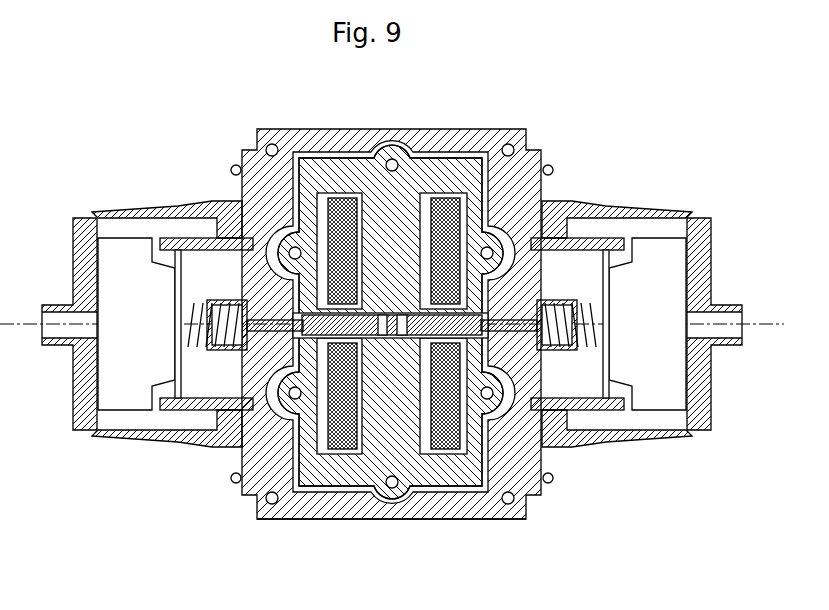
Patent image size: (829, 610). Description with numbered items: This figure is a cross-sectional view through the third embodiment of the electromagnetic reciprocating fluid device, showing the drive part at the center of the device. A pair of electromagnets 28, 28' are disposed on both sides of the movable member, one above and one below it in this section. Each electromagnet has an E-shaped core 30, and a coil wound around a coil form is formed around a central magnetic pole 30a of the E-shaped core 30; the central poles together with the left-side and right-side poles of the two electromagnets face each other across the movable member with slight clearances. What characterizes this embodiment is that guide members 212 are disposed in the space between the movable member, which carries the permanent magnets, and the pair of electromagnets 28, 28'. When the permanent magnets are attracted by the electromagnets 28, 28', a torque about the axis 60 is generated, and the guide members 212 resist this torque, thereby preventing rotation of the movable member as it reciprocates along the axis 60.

The electromagnet 28 is at (391, 288).
The electromagnet 28' is at (391, 557).
The E-shaped core 30 is at (459, 170).
The central magnetic pole 30a is at (400, 232).
The guide member 212 is at (563, 237).
The axis 60 is at (749, 336).